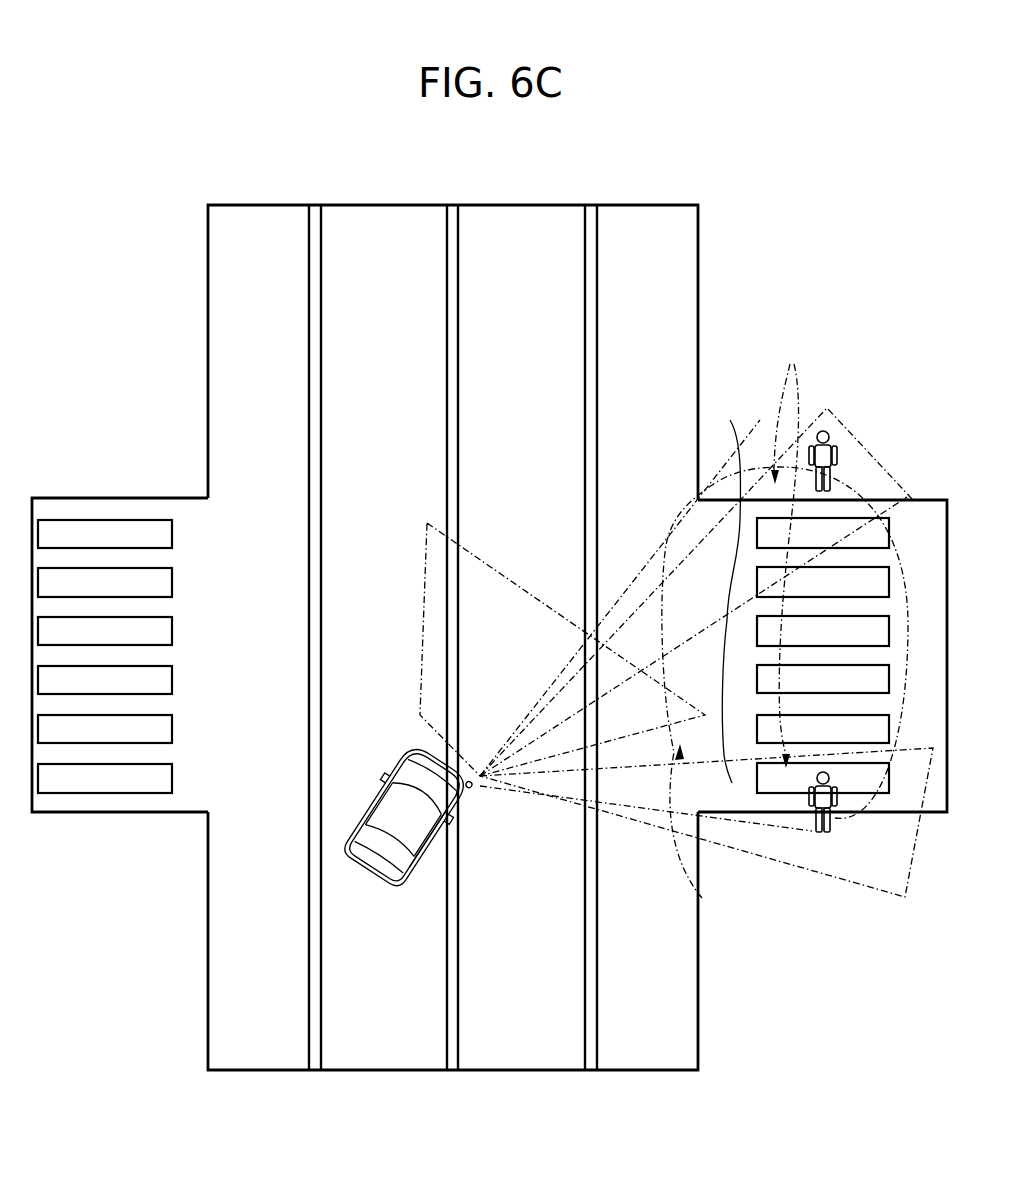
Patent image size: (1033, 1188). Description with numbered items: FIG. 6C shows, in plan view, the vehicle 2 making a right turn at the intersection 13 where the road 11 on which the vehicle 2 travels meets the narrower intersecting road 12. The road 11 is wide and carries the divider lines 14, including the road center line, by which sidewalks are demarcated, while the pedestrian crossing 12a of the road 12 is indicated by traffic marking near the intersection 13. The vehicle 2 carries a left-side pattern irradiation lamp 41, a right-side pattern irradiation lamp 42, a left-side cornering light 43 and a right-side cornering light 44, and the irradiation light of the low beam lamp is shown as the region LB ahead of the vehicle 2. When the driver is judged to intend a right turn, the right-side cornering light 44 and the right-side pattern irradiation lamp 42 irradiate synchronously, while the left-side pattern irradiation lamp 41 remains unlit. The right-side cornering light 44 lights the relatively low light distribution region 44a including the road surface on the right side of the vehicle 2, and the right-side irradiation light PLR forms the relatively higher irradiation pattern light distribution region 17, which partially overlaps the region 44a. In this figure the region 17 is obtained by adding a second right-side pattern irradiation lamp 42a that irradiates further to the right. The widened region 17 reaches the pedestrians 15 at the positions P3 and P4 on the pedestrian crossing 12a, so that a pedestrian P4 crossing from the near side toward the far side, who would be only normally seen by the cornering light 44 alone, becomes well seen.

The vehicle 2 is at (386, 852).
The road 11 is at (368, 215).
The road 12 is at (925, 513).
The pedestrian crossing 12a is at (764, 774).
The intersection 13 is at (392, 613).
The divider lines 14 is at (313, 290).
The pedestrian 15 is at (799, 845).
The irradiation pattern light distribution region 17 is at (789, 554).
The left-side pattern irradiation lamp 41 is at (420, 755).
The right-side pattern irradiation lamp 42 is at (463, 800).
The second right-side pattern irradiation lamp 42a is at (473, 793).
The left-side cornering light 43 is at (420, 740).
The right-side cornering light 44 is at (484, 789).
The light distribution region 44a is at (703, 893).
The irradiation light from the low beam lamp LB is at (508, 602).
The right-side irradiation light PLR is at (667, 527).
The pedestrian position P3 is at (838, 437).
The pedestrian position P4 is at (835, 822).